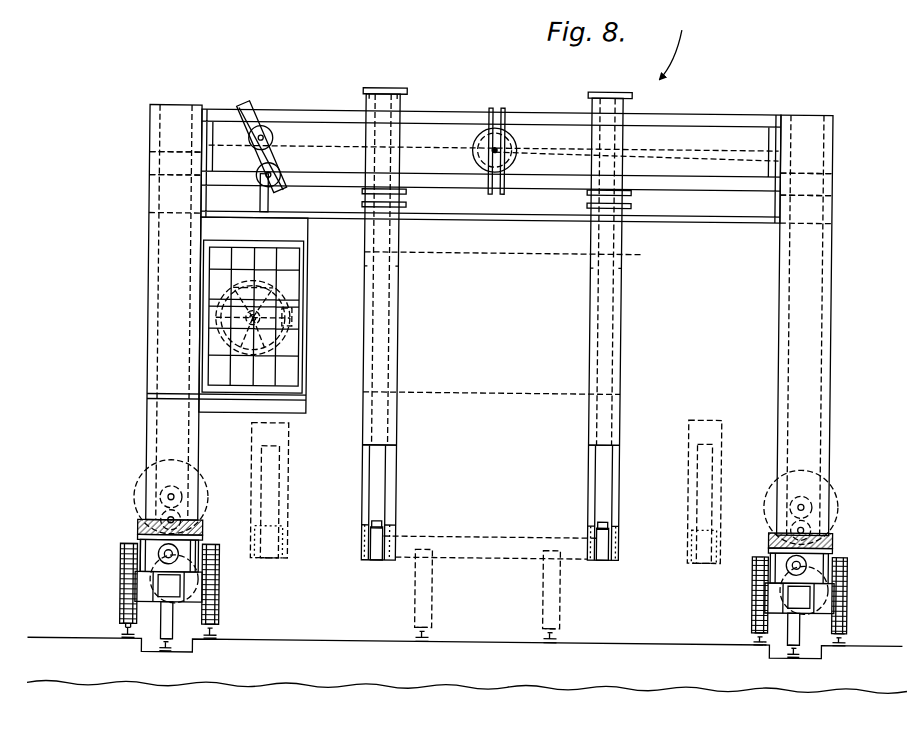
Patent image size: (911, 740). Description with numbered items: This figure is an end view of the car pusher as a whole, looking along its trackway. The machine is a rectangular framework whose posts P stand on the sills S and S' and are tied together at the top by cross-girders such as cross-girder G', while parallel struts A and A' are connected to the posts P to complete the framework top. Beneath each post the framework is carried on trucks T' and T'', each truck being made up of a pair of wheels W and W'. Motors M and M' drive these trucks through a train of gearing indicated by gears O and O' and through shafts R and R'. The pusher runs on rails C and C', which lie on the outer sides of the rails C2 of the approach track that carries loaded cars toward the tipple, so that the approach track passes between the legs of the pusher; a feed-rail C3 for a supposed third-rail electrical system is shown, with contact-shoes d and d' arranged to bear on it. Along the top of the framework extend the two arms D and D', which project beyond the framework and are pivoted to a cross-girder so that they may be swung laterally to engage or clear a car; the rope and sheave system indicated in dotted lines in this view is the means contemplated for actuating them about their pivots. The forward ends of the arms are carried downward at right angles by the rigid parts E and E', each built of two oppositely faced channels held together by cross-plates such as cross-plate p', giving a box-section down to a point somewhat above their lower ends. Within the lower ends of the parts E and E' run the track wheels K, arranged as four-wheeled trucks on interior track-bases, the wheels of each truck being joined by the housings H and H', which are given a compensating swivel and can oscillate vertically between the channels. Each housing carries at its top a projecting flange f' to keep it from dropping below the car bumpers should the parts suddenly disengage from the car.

The strut A is at (148, 158).
The strut A' is at (833, 175).
The rail C is at (485, 626).
The rail C' is at (717, 629).
The approach track rail C2 is at (420, 642).
The feed-rail C3 is at (170, 654).
The arm D is at (400, 155).
The arm D' is at (582, 158).
The rigid part E is at (390, 327).
The rigid part E' is at (506, 329).
The cross-girder G' is at (491, 152).
The housing H is at (375, 560).
The housing H' is at (613, 563).
The track wheel K is at (365, 532).
The motor M is at (144, 496).
The motor M' is at (827, 507).
The gearing O is at (196, 525).
The gearing O' is at (769, 536).
The post P is at (150, 447).
The shaft R is at (189, 625).
The shaft R' is at (766, 634).
The sill S is at (139, 534).
The sill S' is at (827, 540).
The truck T' is at (810, 620).
The truck T'' is at (137, 606).
The wheel W is at (736, 594).
The wheel W' is at (474, 589).
The contact-shoe d is at (158, 615).
The contact-shoe d' is at (840, 628).
The projecting flange f' is at (513, 505).
The cross-plate p' is at (491, 429).